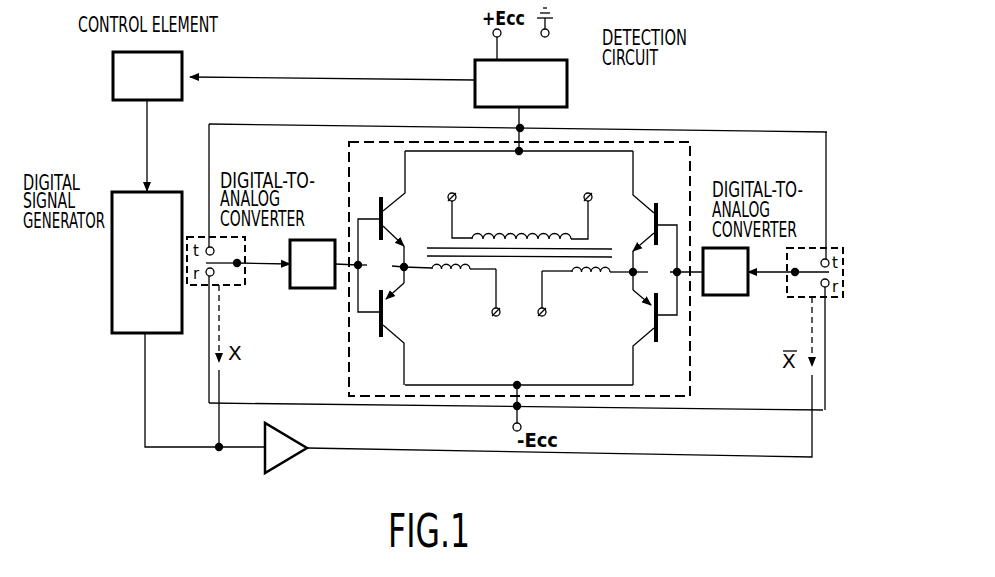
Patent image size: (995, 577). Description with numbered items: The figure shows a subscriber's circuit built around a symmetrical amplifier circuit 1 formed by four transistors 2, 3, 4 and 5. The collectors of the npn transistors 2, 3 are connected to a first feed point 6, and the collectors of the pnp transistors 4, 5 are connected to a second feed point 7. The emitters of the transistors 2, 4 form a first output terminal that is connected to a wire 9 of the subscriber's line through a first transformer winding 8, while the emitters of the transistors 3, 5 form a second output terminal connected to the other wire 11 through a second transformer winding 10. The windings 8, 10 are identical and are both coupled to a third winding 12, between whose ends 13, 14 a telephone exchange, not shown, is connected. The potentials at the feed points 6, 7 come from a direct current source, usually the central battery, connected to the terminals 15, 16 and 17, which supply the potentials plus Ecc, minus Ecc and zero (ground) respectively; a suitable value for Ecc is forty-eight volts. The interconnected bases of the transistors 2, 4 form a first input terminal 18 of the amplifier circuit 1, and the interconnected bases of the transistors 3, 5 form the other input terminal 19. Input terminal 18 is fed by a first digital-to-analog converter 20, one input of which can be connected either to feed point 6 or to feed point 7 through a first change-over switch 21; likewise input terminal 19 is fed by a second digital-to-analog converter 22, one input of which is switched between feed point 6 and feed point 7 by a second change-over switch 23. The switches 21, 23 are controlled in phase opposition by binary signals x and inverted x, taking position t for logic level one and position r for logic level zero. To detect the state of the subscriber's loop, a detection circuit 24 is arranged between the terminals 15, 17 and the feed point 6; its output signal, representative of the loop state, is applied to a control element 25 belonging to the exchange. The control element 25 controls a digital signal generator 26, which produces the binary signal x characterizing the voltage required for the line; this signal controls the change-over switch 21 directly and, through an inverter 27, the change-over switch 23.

The symmetrical amplifier circuit 1 is at (691, 197).
The npn transistor 2 is at (384, 217).
The npn transistor 3 is at (653, 218).
The pnp transistor 4 is at (384, 313).
The pnp transistor 5 is at (653, 314).
The first feed point 6 is at (524, 127).
The second feed point 7 is at (520, 409).
The first transformer winding 8 is at (451, 272).
The wire of a subscriber's line 9 is at (494, 317).
The second transformer winding 10 is at (597, 275).
The other wire of the subscriber's line 11 is at (544, 317).
The third winding 12 is at (507, 237).
The end of third winding 13 is at (465, 191).
The end of third winding 14 is at (576, 191).
The terminal 15 is at (493, 35).
The terminal 16 is at (513, 428).
The terminal 17 is at (549, 36).
The first input terminal 18 is at (374, 266).
The other input terminal 19 is at (541, 273).
The first digital-to-analog converter 20 is at (312, 290).
The first change-over switch 21 is at (242, 288).
The second digital-to-analog converter 22 is at (730, 297).
The second change-over switch 23 is at (799, 299).
The detection circuit 24 is at (562, 72).
The control element 25 is at (160, 101).
The digital signal generator 26 is at (163, 334).
The inverter 27 is at (287, 436).